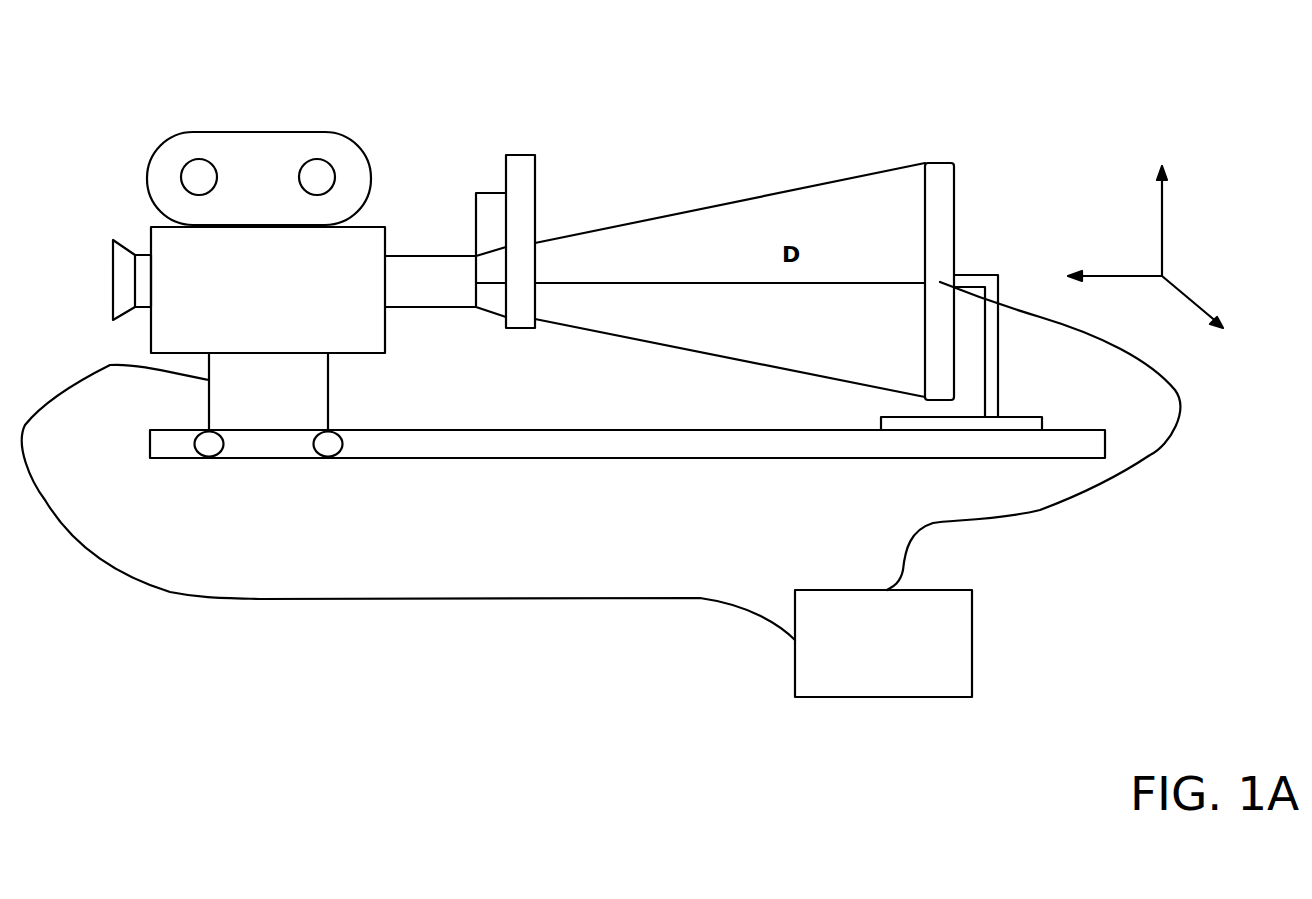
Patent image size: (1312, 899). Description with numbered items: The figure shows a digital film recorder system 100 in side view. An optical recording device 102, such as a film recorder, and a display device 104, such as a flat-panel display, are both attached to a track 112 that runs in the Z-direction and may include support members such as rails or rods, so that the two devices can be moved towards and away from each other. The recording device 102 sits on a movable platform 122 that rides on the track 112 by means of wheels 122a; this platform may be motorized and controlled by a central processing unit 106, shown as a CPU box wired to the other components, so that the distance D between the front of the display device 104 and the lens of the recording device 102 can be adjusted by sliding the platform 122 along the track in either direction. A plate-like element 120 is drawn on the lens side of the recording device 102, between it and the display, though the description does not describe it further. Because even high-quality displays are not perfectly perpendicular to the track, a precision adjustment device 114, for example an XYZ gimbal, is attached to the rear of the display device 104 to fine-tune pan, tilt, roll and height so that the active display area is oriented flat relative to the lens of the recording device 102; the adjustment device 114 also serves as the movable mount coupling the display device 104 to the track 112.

The system 100 is at (762, 172).
The optical recording device 102 is at (387, 227).
The display device 104 is at (957, 197).
The central processing unit 106 is at (837, 590).
The track 112 is at (557, 430).
The precision adjustment device 114 is at (993, 275).
The plate / lens mount 120 is at (523, 155).
The movable platform 122 is at (332, 417).
The wheels 122a is at (209, 458).